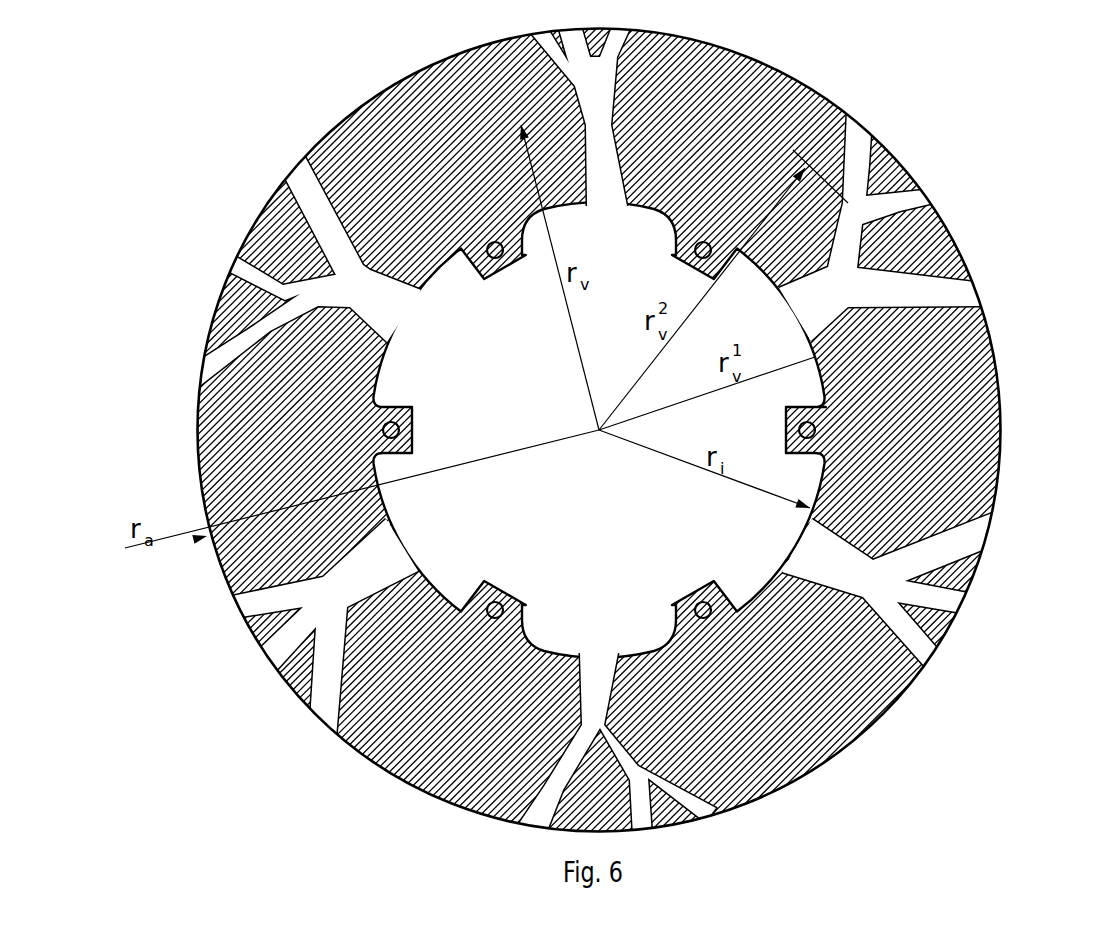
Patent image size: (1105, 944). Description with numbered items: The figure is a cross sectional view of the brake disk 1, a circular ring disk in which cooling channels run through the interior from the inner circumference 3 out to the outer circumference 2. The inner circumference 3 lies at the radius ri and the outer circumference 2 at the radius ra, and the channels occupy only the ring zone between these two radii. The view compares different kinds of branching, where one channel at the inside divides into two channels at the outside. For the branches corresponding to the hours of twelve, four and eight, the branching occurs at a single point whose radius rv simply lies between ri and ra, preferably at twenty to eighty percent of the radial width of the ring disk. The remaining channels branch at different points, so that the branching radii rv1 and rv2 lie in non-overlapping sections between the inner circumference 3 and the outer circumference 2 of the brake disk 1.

The brake disk 1 is at (793, 73).
The outer circumference 2 is at (999, 412).
The inner circumference 3 is at (862, 308).